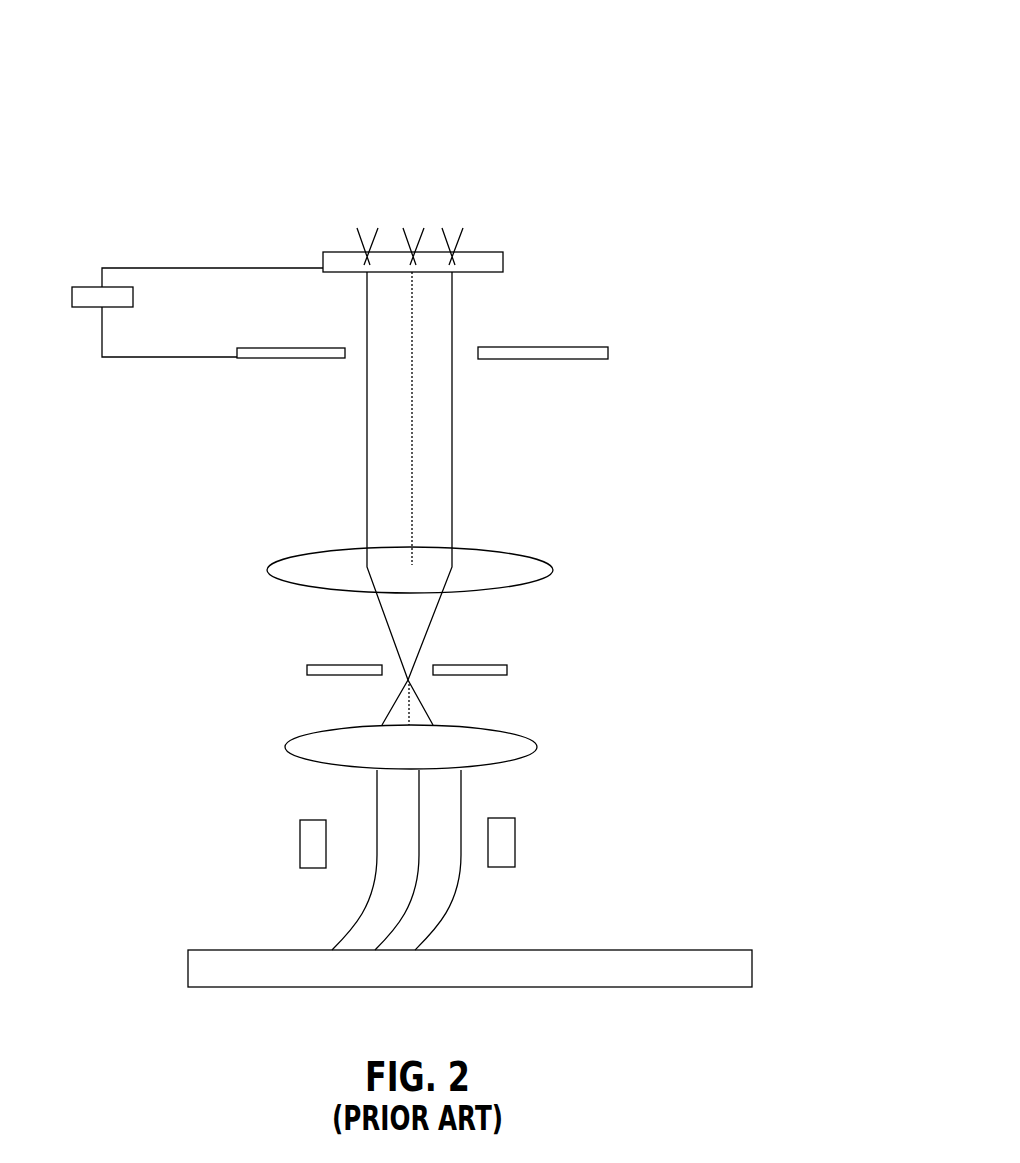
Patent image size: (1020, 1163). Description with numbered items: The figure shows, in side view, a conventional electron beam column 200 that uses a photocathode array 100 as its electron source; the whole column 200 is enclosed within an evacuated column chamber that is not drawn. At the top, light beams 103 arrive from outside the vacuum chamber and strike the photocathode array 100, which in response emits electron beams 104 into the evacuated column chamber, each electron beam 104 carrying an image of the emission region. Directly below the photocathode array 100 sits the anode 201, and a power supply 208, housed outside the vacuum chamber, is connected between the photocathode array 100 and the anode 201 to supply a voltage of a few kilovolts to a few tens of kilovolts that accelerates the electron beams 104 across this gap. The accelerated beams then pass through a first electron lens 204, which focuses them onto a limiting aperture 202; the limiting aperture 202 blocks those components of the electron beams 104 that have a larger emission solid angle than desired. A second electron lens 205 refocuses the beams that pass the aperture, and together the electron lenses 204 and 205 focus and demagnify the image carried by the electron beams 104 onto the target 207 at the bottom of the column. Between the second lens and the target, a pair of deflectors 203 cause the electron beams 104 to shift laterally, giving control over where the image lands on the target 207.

The electron beam column 200 is at (630, 78).
The photocathode array 100 is at (503, 262).
The light beams 103 is at (369, 216).
The electron beams 104 is at (450, 325).
The power supply 208 is at (76, 307).
The anode 201 is at (265, 358).
The electron lens 204 is at (528, 553).
The limiting aperture 202 is at (500, 665).
The electron lens 205 is at (515, 730).
The deflectors 203 is at (300, 845).
The target 207 is at (752, 960).